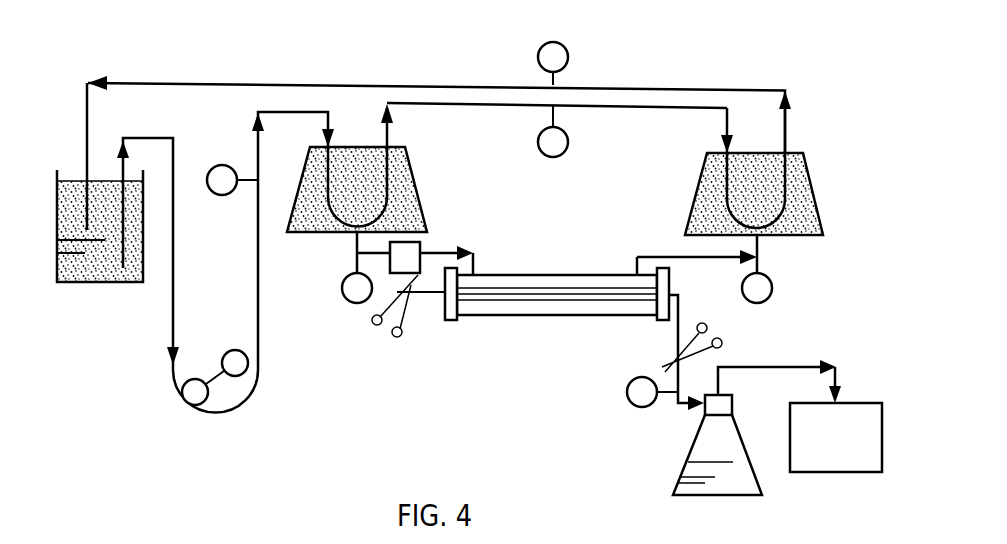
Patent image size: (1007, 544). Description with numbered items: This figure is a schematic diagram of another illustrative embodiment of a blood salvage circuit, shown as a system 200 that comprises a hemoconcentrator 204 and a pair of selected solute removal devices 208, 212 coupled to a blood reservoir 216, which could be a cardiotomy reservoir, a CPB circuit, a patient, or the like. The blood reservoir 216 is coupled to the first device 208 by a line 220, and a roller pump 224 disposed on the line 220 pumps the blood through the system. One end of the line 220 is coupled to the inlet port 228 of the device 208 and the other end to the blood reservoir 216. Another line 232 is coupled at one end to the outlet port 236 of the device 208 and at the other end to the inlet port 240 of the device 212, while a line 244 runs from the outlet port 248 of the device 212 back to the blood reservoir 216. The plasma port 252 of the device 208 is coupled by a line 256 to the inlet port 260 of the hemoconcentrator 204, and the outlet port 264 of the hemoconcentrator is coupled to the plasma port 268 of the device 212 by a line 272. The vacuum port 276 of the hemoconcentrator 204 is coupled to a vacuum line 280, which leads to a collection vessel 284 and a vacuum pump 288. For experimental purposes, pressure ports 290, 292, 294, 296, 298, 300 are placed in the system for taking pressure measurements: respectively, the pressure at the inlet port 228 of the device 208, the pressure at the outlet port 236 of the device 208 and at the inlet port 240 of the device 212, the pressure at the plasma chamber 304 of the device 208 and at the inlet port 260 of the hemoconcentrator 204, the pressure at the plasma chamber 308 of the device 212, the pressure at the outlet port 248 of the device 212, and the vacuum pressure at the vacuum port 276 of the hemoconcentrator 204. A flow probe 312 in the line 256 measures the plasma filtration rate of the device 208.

The system 200 is at (342, 404).
The hemoconcentrator 204 is at (535, 316).
The selected solute removal device 208 is at (410, 165).
The selected solute removal device 212 is at (810, 168).
The blood reservoir 216 is at (80, 283).
The line 220 is at (260, 290).
The roller pump 224 is at (248, 384).
The inlet port 228 is at (323, 145).
The line 232 is at (598, 108).
The outlet port 236 is at (392, 145).
The inlet port 240 is at (730, 150).
The line 244 is at (620, 88).
The outlet port 248 is at (790, 150).
The plasma port 252 is at (356, 235).
The line 256 is at (452, 258).
The inlet port 260 is at (474, 272).
The outlet port 264 is at (633, 272).
The plasma port 268 is at (770, 240).
The line 272 is at (676, 257).
The vacuum port 276 is at (672, 295).
The vacuum line 280 is at (676, 348).
The collection vessel 284 is at (682, 463).
The vacuum pump 288 is at (820, 473).
The pressure port 290 is at (222, 165).
The pressure port 292 is at (553, 157).
The pressure port 294 is at (357, 303).
The pressure port 296 is at (772, 288).
The pressure port 298 is at (537, 57).
The pressure port 300 is at (627, 392).
The plasma chamber 304 is at (405, 192).
The plasma chamber 308 is at (800, 197).
The flow probe 312 is at (426, 243).